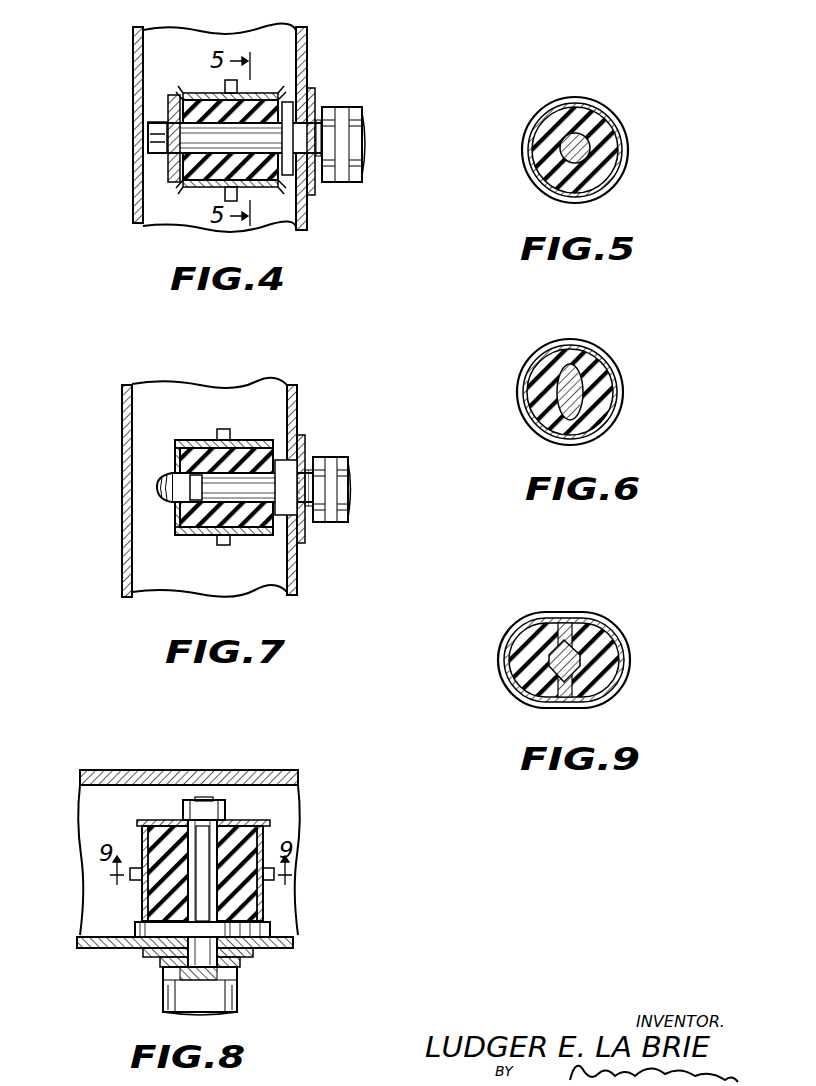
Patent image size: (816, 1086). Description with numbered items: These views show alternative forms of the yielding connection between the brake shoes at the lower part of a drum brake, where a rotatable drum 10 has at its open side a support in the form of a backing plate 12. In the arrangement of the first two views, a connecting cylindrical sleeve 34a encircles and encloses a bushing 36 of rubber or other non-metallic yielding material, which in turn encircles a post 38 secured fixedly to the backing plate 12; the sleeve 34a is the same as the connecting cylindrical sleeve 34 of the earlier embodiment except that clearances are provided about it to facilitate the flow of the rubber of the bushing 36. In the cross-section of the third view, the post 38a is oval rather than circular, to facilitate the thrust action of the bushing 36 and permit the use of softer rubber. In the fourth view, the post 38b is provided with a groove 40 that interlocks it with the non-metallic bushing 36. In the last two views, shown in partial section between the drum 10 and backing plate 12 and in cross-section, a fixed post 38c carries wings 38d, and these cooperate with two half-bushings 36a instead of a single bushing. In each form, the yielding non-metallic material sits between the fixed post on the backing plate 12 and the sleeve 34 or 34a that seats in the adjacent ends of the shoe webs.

In FIG. 4, the rotatable drum 10 is at (133, 99).
In FIG. 7, the rotatable drum 10 is at (122, 426).
In FIG. 8, the rotatable drum 10 is at (215, 775).
In FIG. 4, the backing plate 12 is at (307, 42).
In FIG. 7, the backing plate 12 is at (297, 412).
In FIG. 8, the backing plate 12 is at (270, 952).
In FIG. 6, the connecting cylindrical sleeve 34 is at (527, 380).
In FIG. 7, the connecting cylindrical sleeve 34 is at (205, 445).
In FIG. 4, the sleeve 34a is at (205, 187).
In FIG. 5, the sleeve 34a is at (606, 118).
In FIG. 4, the bushing 36 is at (188, 98).
In FIG. 5, the bushing 36 is at (598, 132).
In FIG. 6, the bushing 36 is at (608, 394).
In FIG. 7, the bushing 36 is at (180, 516).
In FIG. 8, the half-bushings 36a is at (240, 905).
In FIG. 9, the half-bushings 36a is at (550, 622).
In FIG. 4, the post 38 is at (195, 135).
In FIG. 5, the post 38 is at (588, 156).
In FIG. 6, the post 38a is at (597, 370).
In FIG. 7, the post 38b is at (165, 481).
In FIG. 8, the fixed post 38c is at (197, 884).
In FIG. 9, the fixed post 38c is at (626, 682).
In FIG. 8, the wings 38d is at (200, 835).
In FIG. 9, the wings 38d is at (568, 625).
In FIG. 7, the groove 40 is at (193, 488).